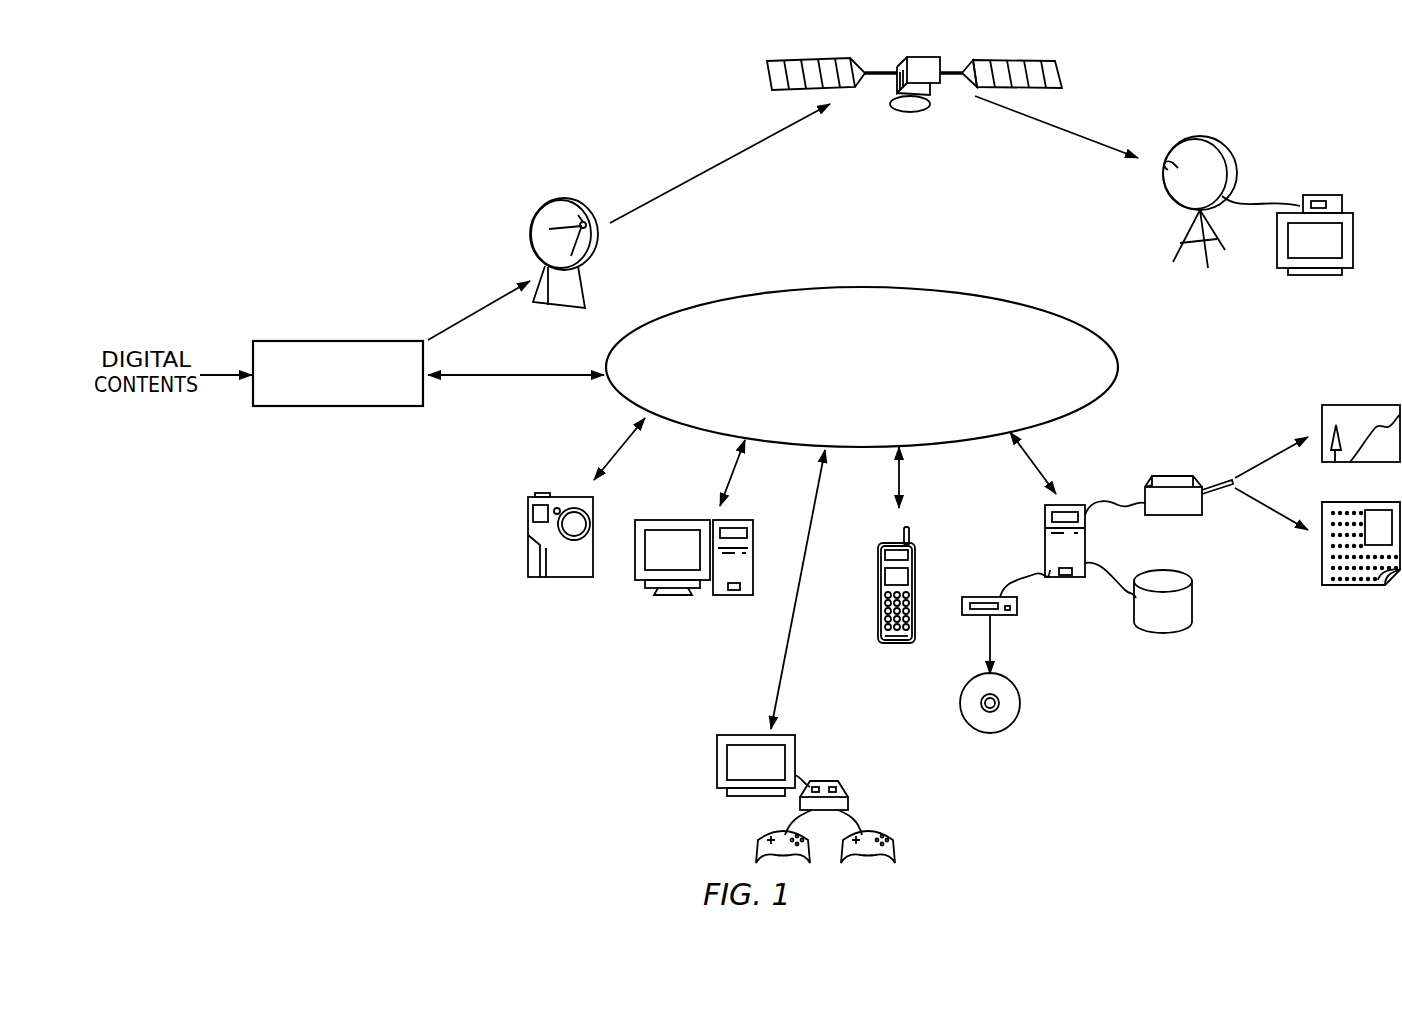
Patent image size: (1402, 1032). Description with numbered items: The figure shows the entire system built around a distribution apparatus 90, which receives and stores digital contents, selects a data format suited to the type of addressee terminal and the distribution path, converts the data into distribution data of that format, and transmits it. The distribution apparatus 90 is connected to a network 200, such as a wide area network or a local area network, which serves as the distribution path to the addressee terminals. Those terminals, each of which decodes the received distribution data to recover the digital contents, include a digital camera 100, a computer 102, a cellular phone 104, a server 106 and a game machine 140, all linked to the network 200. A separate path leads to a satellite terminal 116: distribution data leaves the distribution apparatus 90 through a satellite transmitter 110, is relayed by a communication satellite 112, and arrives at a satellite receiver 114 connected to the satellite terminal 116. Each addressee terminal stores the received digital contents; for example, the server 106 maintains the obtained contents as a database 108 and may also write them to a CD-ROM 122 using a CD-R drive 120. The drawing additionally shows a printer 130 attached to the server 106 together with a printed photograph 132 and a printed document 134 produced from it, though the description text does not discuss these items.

The distribution apparatus 90 is at (340, 406).
The digital camera 100 is at (565, 568).
The computer 102 is at (705, 592).
The cellular phone 104 is at (885, 641).
The server 106 is at (1065, 577).
The database 108 is at (1163, 633).
The satellite transmitter 110 is at (575, 283).
The communication satellite 112 is at (908, 108).
The satellite receiver 114 is at (1203, 148).
The satellite terminal 116 is at (1318, 276).
The CD-R drive 120 is at (976, 597).
The CD-ROM 122 is at (1005, 720).
The printer 130 is at (1170, 478).
The printed photograph 132 is at (1362, 410).
The printed document 134 is at (1368, 585).
The game machine 140 is at (745, 818).
The network 200 is at (862, 288).